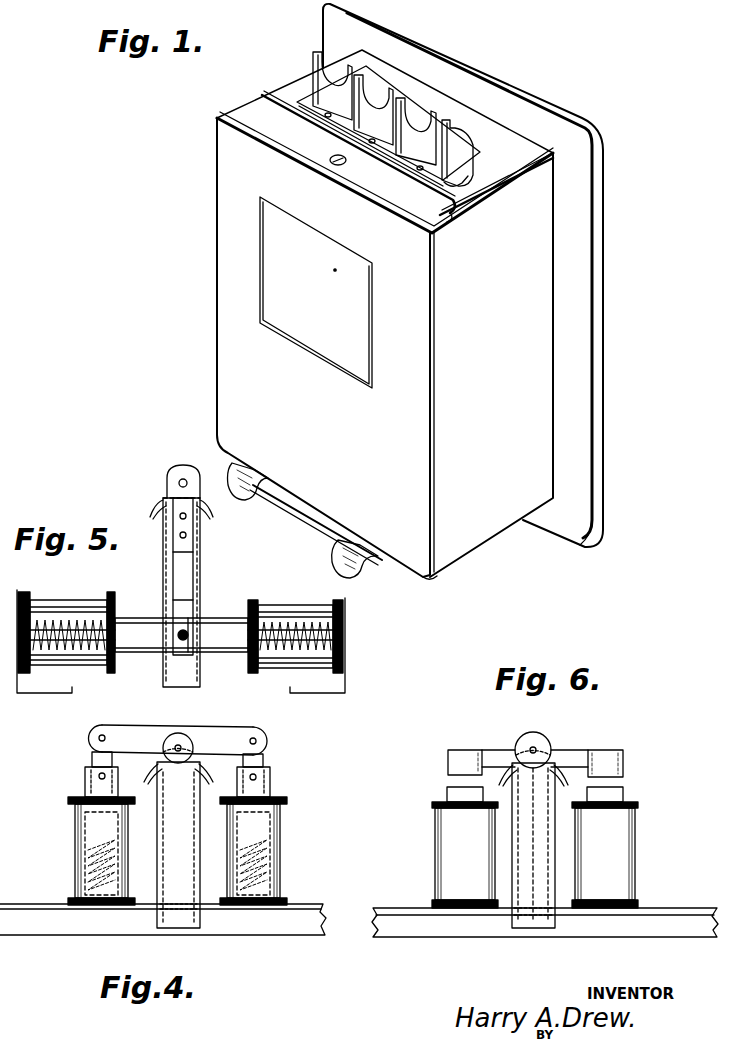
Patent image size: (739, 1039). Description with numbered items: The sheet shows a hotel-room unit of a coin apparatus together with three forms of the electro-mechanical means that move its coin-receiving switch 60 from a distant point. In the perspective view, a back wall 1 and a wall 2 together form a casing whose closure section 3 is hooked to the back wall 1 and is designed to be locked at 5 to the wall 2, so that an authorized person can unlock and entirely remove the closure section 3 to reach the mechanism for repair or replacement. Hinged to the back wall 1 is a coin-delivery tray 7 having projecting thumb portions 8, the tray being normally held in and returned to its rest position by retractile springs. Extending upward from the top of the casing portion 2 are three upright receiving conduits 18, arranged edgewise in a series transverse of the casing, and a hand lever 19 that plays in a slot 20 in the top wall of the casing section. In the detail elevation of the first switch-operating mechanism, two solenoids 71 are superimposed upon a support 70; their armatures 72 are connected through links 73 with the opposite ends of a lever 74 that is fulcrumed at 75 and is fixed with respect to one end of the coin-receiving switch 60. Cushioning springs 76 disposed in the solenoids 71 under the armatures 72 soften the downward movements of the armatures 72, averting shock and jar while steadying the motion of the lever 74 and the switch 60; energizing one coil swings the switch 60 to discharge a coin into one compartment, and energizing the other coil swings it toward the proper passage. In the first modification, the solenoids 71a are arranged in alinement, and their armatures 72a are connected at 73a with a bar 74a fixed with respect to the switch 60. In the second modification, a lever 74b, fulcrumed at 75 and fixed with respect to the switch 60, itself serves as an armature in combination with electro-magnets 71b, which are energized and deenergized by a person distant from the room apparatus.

In FIG. 1, the back wall 1 is at (602, 419).
In FIG. 1, the wall 2 is at (512, 174).
In FIG. 1, the closure section 3 is at (222, 243).
In FIG. 1, the lock 5 is at (330, 157).
In FIG. 1, the coin-delivery tray 7 is at (310, 506).
In FIG. 1, the thumb portions 8 is at (234, 465).
In FIG. 1, the upright receiving conduits 18 is at (316, 82).
In FIG. 1, the hand lever 19 is at (462, 182).
In FIG. 1, the slot 20 is at (452, 188).
In FIG. 5, the coin-receiving switch 60 is at (200, 556).
In FIG. 4, the coin-receiving switch 60 is at (178, 845).
In FIG. 6, the coin-receiving switch 60 is at (527, 918).
In FIG. 4, the support 70 is at (62, 925).
In FIG. 4, the solenoids 71 is at (75, 847).
In FIG. 4, the armatures 72 is at (86, 786).
In FIG. 4, the links 73 is at (94, 756).
In FIG. 4, the lever 74 is at (204, 732).
In FIG. 4, the fulcrum 75 is at (176, 745).
In FIG. 6, the fulcrum 75 is at (531, 747).
In FIG. 4, the cushioning springs 76 is at (78, 877).
In FIG. 5, the solenoids 71a is at (290, 590).
In FIG. 5, the armatures 72a is at (228, 606).
In FIG. 5, the connection 73a is at (181, 632).
In FIG. 5, the bar 74a is at (183, 584).
In FIG. 6, the electro-magnets 71b is at (650, 836).
In FIG. 6, the lever 74b is at (575, 752).